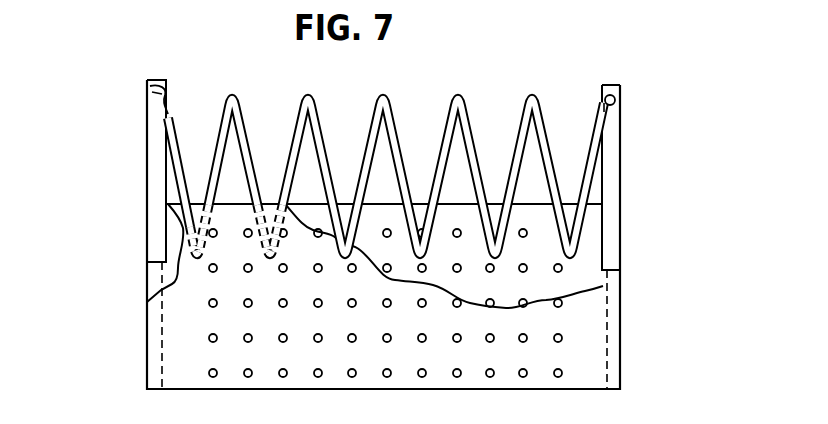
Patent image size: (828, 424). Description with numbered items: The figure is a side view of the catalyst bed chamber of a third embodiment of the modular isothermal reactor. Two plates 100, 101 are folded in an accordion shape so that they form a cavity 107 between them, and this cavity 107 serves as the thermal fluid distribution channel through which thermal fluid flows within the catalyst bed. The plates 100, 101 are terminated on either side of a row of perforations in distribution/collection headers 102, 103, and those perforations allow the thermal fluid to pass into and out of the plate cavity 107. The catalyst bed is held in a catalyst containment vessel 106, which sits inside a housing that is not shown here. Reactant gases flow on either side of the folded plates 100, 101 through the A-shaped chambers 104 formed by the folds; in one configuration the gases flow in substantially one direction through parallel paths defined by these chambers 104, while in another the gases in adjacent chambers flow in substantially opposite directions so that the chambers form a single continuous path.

The plate 100 is at (612, 142).
The plate 101 is at (596, 127).
The distribution/collection header 102 is at (616, 100).
The distribution/collection header 103 is at (147, 93).
The A-shaped chamber 104 is at (543, 228).
The catalyst containment vessel 106 is at (620, 333).
The cavity 107 is at (535, 91).